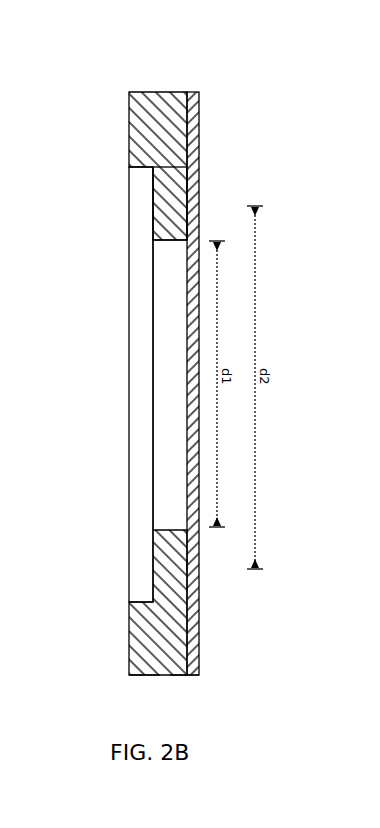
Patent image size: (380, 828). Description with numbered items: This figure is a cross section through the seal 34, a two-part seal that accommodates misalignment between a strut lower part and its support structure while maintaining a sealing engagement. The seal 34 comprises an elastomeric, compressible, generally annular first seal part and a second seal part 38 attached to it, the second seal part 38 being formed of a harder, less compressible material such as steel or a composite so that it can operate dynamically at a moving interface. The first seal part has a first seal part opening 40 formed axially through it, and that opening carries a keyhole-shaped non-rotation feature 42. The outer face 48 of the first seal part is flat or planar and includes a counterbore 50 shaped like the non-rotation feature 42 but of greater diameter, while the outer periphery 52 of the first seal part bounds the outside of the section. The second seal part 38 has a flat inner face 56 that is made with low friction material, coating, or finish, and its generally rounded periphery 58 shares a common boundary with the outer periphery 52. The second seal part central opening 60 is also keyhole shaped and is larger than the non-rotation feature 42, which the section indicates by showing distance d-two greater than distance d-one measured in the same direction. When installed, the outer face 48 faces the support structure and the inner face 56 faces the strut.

The seal 34 is at (167, 373).
The second seal part 38 is at (200, 145).
The first seal part opening 40 is at (167, 384).
The non-rotation feature 42 is at (170, 527).
The outer face 48 is at (129, 134).
The counterbore 50 is at (167, 206).
The outer periphery 52 is at (149, 677).
The inner face 56 is at (195, 194).
The rounded periphery 58 is at (191, 677).
The second seal part central opening 60 is at (189, 566).